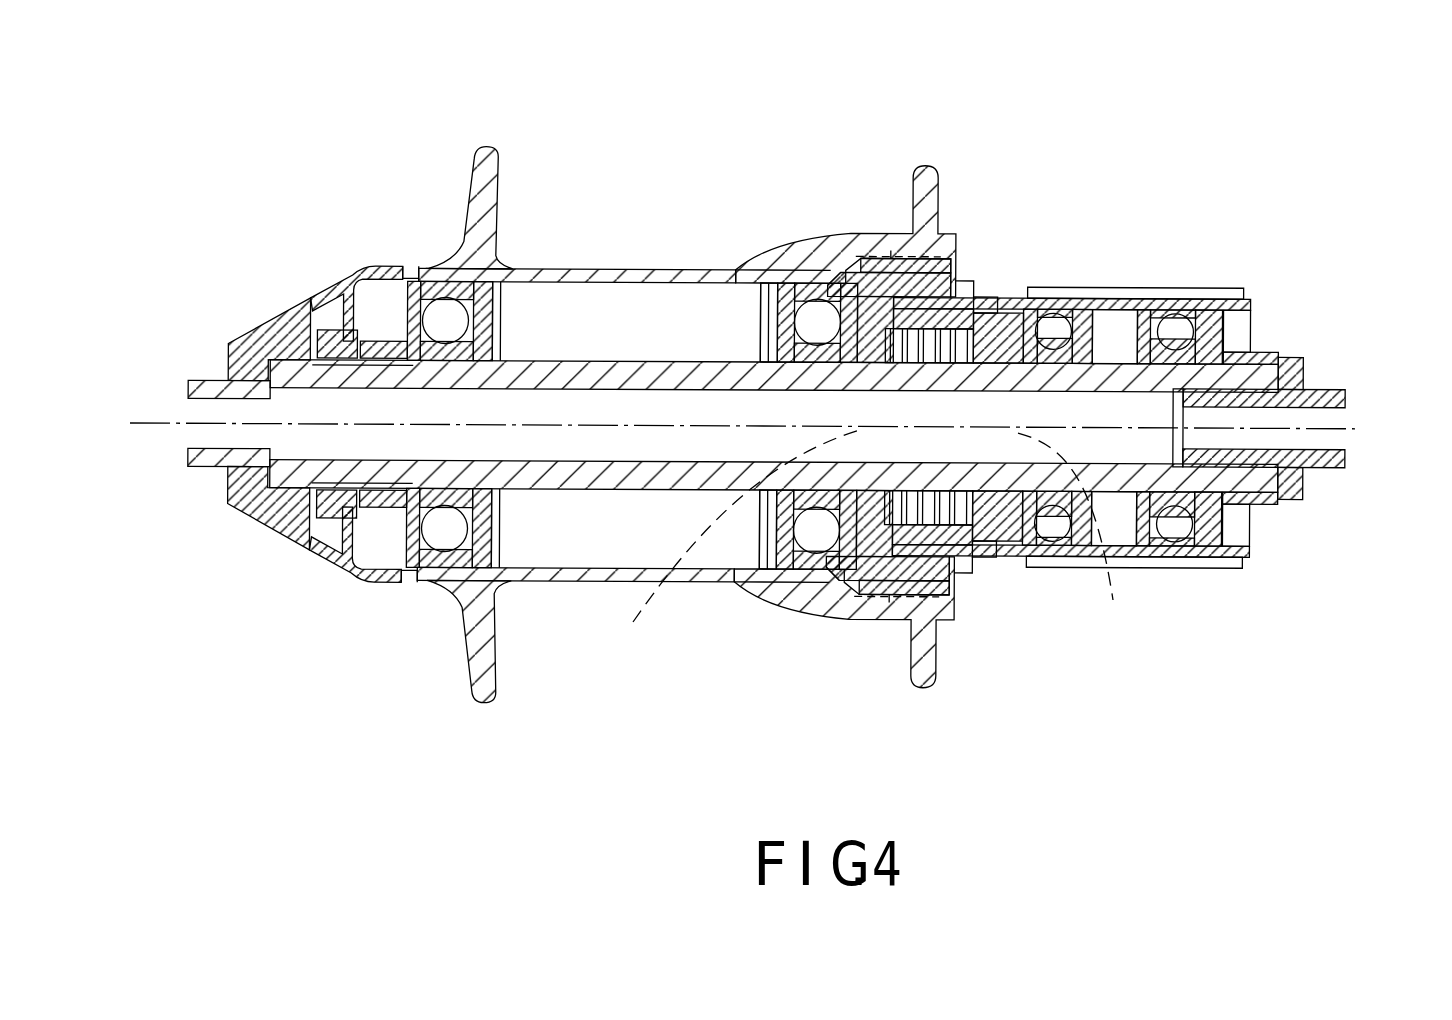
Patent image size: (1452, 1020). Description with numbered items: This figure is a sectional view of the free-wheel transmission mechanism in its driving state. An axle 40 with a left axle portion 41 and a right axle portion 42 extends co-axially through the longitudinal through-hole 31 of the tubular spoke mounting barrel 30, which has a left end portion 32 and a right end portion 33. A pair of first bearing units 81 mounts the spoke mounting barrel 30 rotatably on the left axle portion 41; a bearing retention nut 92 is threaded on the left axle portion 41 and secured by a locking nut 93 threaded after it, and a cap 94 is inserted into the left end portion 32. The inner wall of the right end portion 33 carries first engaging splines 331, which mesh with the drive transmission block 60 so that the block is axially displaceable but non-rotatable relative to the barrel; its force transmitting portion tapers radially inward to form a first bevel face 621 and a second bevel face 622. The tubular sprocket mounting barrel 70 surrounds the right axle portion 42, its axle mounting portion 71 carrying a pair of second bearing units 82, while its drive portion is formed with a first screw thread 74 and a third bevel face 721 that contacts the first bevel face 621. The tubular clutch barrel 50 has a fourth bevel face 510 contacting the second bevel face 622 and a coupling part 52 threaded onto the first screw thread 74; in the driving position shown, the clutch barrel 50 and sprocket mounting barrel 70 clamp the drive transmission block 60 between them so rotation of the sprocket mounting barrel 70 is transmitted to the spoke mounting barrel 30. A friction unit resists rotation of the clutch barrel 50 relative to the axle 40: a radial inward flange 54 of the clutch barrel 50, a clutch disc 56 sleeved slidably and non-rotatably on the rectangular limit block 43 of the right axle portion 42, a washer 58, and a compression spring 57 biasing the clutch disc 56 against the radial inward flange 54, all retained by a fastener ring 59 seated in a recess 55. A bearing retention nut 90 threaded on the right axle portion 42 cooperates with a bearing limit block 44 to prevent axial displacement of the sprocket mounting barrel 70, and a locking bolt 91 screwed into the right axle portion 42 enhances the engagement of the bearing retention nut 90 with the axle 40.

The spoke mounting barrel 30 is at (505, 146).
The longitudinal through-hole 31 is at (557, 293).
The left end portion 32 is at (418, 262).
The right end portion 33 is at (822, 587).
The first engaging splines 331 is at (885, 232).
The axle 40 is at (607, 355).
The left axle portion 41 is at (312, 312).
The right axle portion 42 is at (1263, 360).
The rectangular limit block 43 is at (725, 545).
The bearing limit block 44 is at (1115, 598).
The clutch barrel 50 is at (836, 290).
The fourth bevel face 510 is at (835, 262).
The coupling part 52 is at (1000, 305).
The radial inward flange 54 is at (755, 270).
The recess 55 is at (1060, 312).
The clutch disc 56 is at (800, 275).
The compression spring 57 is at (985, 305).
The washer 58 is at (1045, 305).
The fastener ring 59 is at (1105, 312).
The drive transmission block 60 is at (928, 252).
The first bevel face 621 is at (905, 232).
The second bevel face 622 is at (878, 262).
The sprocket mounting barrel 70 is at (1242, 276).
The axle mounting portion 71 is at (1220, 290).
The third bevel face 721 is at (973, 262).
The first screw thread 74 is at (983, 550).
The first bearing units 81 is at (450, 540).
The second bearing units 82 is at (1178, 532).
The bearing retention nut 90 is at (1274, 515).
The locking bolt 91 is at (1300, 497).
The bearing retention nut 92 is at (380, 500).
The locking nut 93 is at (332, 508).
The cap 94 is at (250, 508).